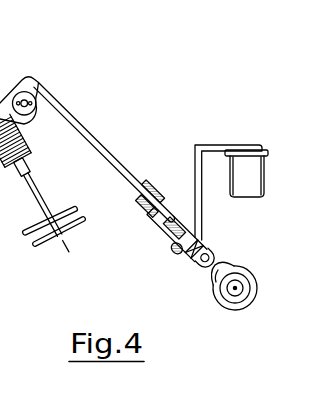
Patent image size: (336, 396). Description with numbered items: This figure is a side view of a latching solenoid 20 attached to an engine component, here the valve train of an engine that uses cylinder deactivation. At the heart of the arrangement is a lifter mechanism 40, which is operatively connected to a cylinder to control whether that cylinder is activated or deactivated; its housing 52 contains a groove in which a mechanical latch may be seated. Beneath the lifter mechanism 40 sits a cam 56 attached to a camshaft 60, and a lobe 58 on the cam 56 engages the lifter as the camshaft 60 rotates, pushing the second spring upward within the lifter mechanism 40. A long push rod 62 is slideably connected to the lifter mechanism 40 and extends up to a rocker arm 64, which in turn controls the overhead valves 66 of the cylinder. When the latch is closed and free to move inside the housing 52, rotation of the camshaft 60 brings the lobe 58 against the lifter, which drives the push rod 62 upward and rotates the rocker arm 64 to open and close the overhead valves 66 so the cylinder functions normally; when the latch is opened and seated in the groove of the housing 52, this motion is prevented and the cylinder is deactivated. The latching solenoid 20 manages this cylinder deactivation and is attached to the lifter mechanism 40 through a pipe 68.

The latching solenoid 20 is at (250, 183).
The lifter mechanism 40 is at (165, 243).
The housing 52 is at (203, 243).
The cam 56 is at (227, 277).
The lobe 58 is at (224, 264).
The camshaft 60 is at (236, 289).
The push rod 62 is at (99, 143).
The rocker arm 64 is at (28, 78).
The overhead valves 66 is at (31, 180).
The pipe 68 is at (205, 143).